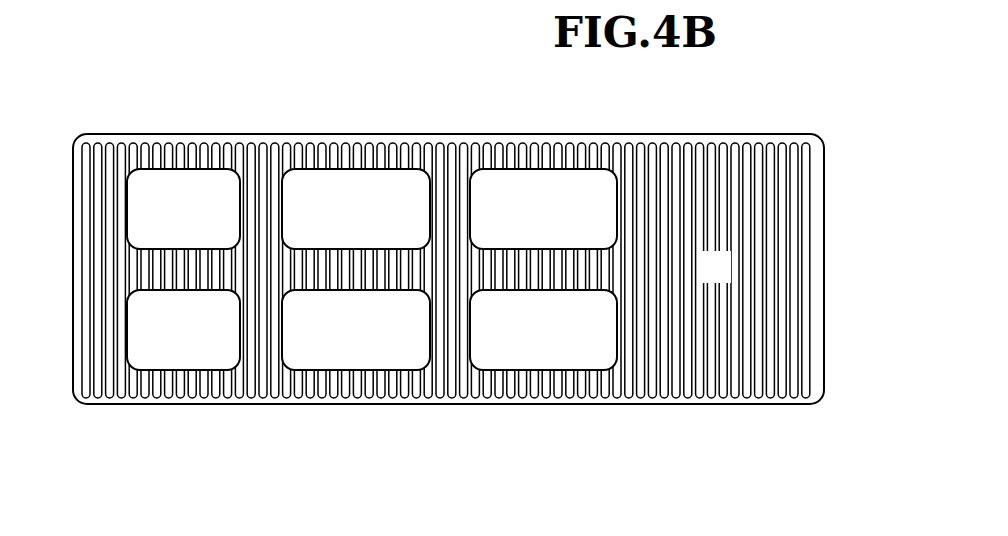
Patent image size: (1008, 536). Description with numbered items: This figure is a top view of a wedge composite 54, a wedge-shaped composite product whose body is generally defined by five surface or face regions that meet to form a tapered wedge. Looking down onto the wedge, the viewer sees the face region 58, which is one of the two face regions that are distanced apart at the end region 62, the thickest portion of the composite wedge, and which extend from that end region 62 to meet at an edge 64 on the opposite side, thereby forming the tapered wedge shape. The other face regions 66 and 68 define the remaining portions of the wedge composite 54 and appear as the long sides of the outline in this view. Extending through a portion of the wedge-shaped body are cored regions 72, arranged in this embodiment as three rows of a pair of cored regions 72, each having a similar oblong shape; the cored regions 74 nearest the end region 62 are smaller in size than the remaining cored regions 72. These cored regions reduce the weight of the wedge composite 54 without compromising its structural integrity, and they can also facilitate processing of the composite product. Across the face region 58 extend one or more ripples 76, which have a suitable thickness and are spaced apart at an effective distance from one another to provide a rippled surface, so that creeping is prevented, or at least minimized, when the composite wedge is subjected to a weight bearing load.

The wedge composite 54 is at (454, 275).
The face region 58 is at (727, 279).
The end region 62 is at (73, 287).
The edge 64 is at (825, 223).
The face region 66 is at (458, 405).
The face region 68 is at (450, 135).
The cored regions 72 is at (348, 218).
The cored regions 74 is at (180, 197).
The ripples 76 is at (782, 143).